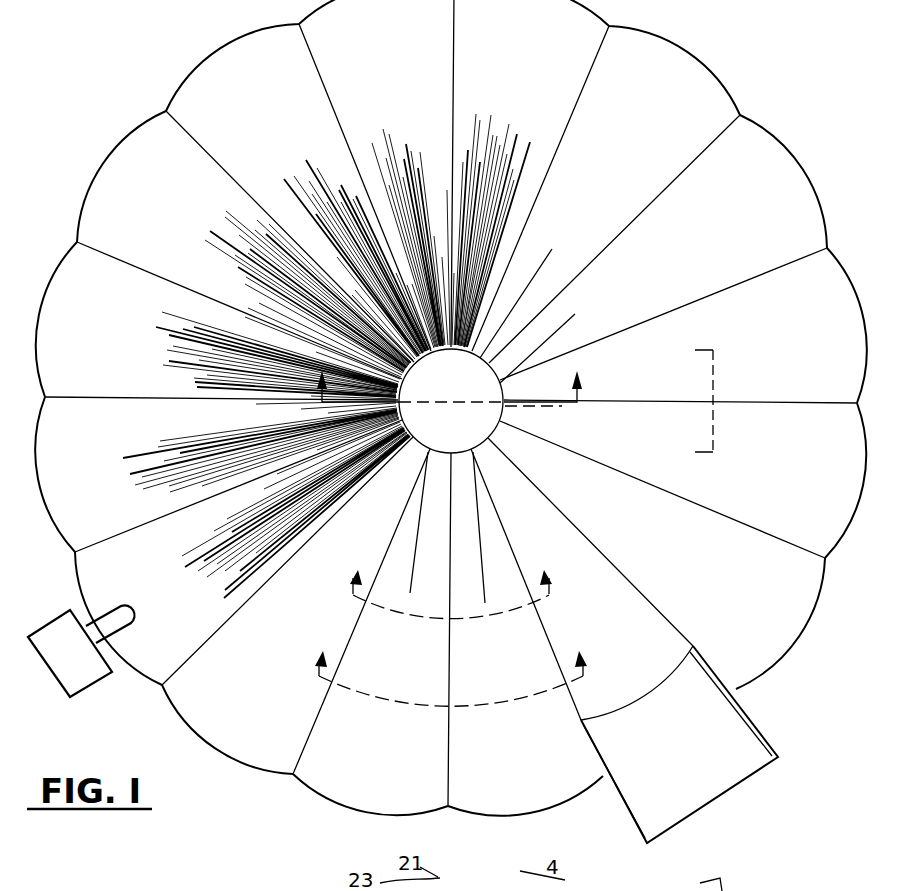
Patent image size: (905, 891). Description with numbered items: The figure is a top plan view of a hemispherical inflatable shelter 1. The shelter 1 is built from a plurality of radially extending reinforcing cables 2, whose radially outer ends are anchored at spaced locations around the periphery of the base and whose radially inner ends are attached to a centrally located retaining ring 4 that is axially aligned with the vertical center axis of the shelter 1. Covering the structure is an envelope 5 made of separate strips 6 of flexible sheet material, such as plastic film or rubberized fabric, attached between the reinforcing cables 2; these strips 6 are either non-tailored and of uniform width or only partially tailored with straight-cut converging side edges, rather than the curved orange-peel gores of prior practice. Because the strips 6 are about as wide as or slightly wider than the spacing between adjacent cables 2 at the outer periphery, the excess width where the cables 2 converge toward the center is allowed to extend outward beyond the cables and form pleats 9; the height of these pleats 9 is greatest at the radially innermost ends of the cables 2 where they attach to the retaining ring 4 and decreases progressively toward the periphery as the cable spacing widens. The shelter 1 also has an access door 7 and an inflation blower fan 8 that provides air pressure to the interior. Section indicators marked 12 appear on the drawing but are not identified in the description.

The shelter 1 is at (134, 126).
The reinforcing cables 2 is at (455, 193).
The retaining ring 4 is at (459, 390).
The envelope 5 is at (768, 184).
The strips 6 is at (256, 153).
The access door 7 is at (808, 712).
The inflation blower fan 8 is at (30, 592).
The pleats 9 is at (607, 492).
The fold line 12 is at (679, 403).